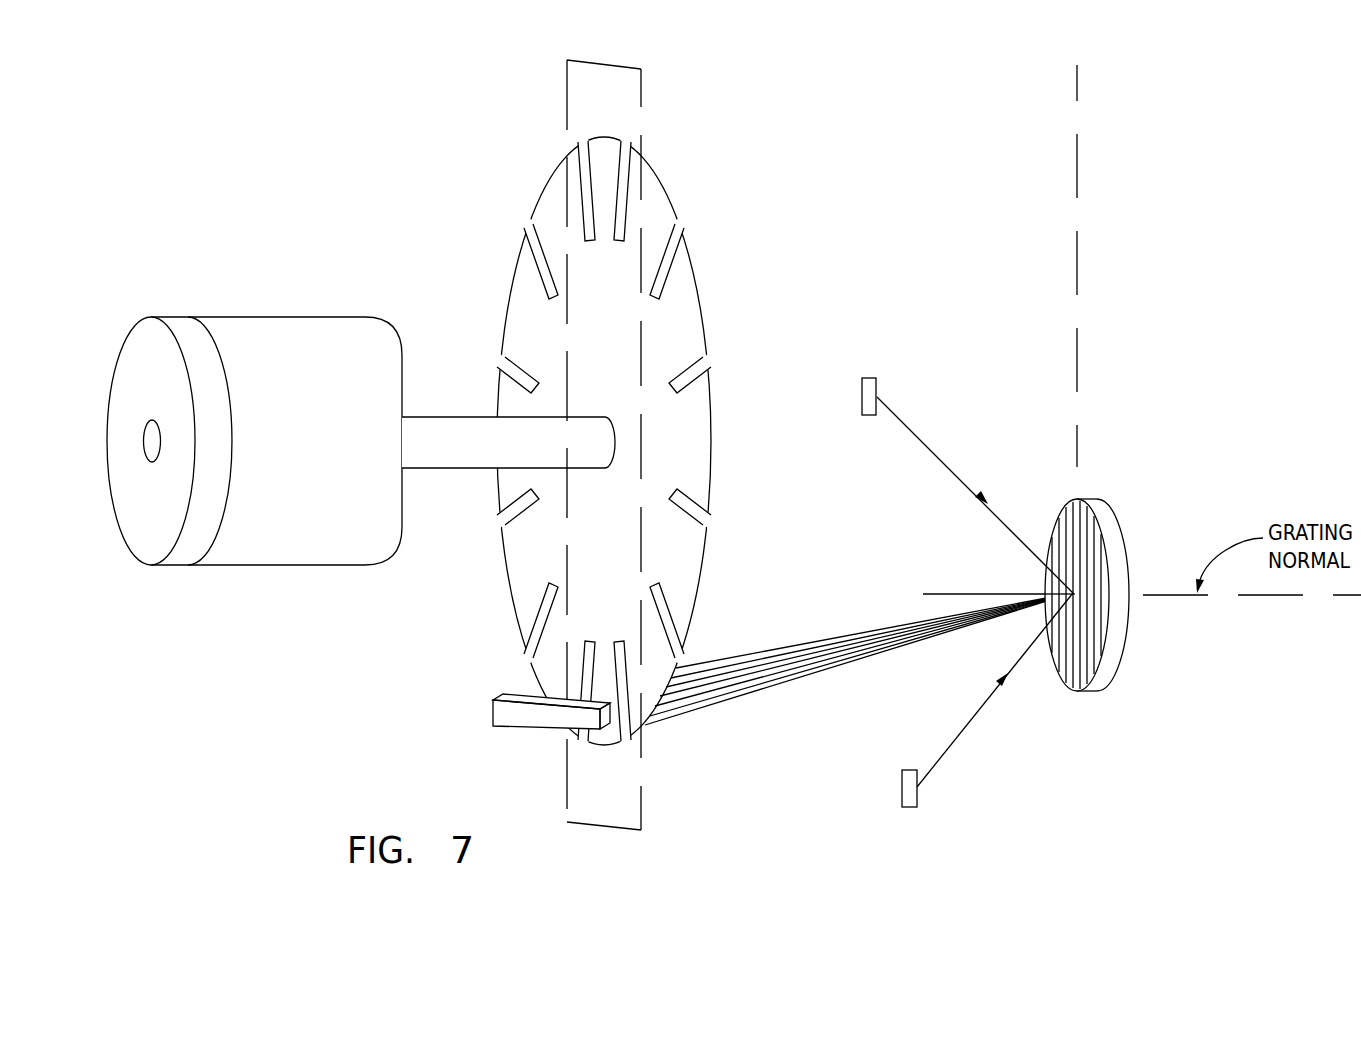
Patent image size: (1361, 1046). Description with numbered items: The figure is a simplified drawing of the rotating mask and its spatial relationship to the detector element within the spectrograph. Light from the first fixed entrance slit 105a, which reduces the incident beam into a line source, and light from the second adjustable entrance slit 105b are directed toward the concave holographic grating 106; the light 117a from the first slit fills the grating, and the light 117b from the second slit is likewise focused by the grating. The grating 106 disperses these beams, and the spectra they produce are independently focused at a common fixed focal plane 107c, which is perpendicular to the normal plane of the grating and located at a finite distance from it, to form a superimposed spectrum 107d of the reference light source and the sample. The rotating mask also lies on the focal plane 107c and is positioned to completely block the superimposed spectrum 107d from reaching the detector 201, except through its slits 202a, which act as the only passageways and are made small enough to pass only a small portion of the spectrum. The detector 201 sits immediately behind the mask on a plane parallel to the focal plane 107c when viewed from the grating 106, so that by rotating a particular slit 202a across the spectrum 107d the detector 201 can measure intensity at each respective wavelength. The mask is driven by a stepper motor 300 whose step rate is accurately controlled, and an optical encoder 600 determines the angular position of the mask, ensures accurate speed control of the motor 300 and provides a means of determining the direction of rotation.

The optical encoder 600 is at (197, 348).
The stepper motor 300 is at (308, 345).
The focal plane 107c is at (624, 812).
The slit 202a is at (568, 658).
The detector 201 is at (600, 730).
The superimposed spectrum 107d is at (905, 645).
The concave holographic grating 106 is at (1119, 502).
The light from first slit 117a is at (944, 437).
The light from second slit 117b is at (998, 710).
The first fixed entrance slit 105a is at (872, 365).
The second adjustable entrance slit 105b is at (928, 815).